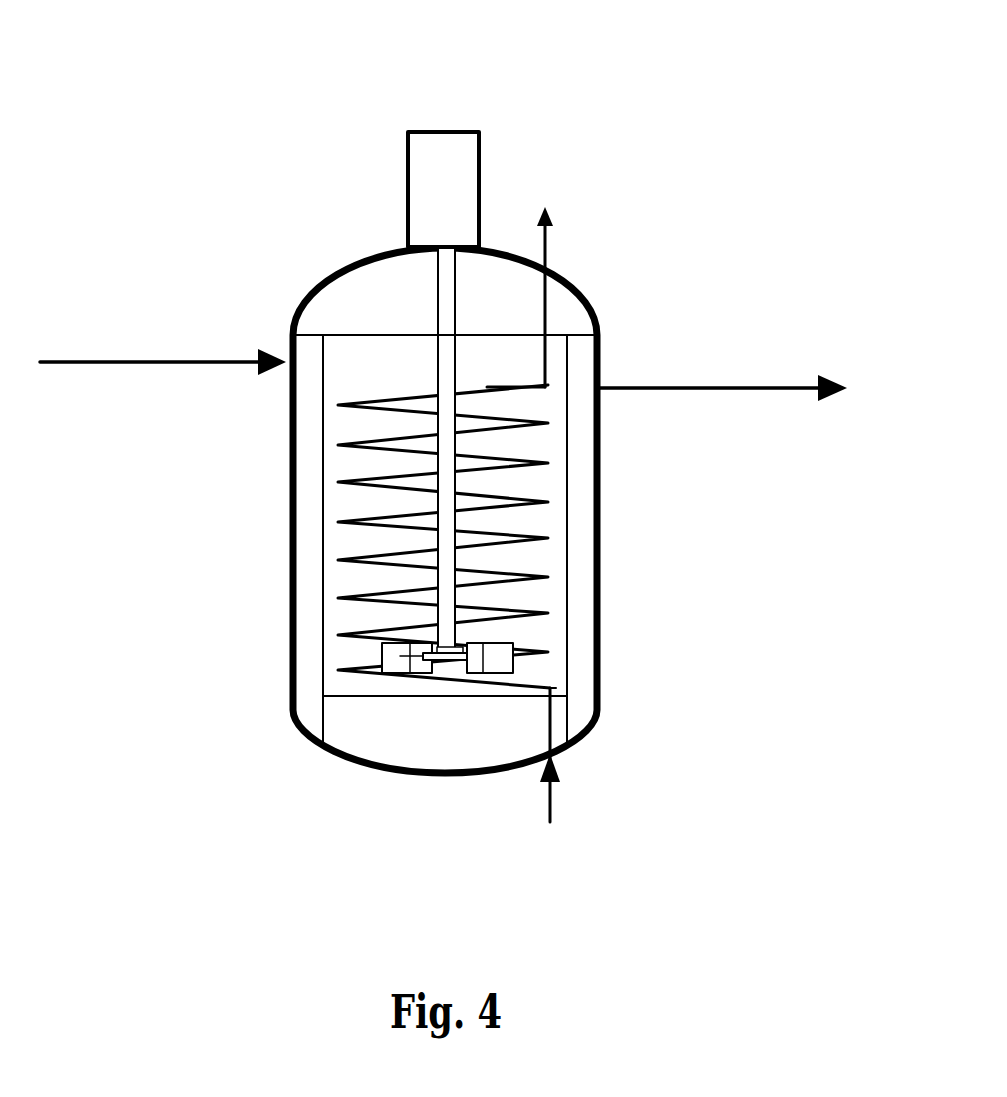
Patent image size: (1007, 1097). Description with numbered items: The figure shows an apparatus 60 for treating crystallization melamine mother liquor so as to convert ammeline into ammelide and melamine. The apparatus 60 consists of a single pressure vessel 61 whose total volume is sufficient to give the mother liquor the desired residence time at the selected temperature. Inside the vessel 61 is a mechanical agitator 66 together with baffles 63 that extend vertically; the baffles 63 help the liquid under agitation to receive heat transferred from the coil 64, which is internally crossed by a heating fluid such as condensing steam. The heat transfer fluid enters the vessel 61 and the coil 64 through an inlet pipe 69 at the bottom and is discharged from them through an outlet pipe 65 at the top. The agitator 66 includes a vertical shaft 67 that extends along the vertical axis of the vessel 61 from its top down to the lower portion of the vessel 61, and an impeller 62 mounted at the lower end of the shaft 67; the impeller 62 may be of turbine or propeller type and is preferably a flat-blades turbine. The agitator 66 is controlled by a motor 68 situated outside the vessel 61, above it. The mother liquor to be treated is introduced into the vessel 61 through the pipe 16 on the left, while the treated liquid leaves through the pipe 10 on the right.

The apparatus 60 is at (274, 140).
The pressure vessel 61 is at (289, 481).
The impeller 62 is at (497, 652).
The baffles 63 is at (578, 555).
The coil 64 is at (485, 390).
The outlet pipe 65 is at (548, 235).
The mechanical agitator 66 is at (398, 656).
The vertical shaft 67 is at (455, 437).
The motor 68 is at (452, 160).
The inlet pipe 69 is at (553, 800).
The pipe 16 is at (192, 358).
The pipe 10 is at (698, 392).